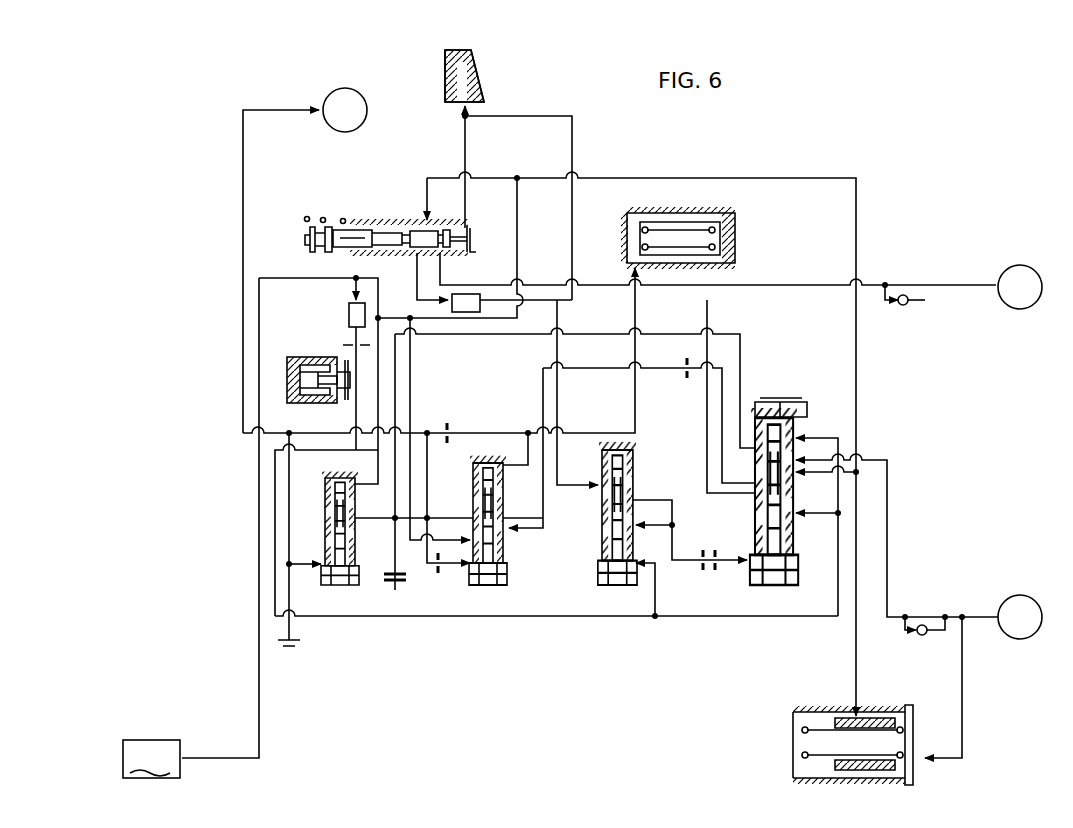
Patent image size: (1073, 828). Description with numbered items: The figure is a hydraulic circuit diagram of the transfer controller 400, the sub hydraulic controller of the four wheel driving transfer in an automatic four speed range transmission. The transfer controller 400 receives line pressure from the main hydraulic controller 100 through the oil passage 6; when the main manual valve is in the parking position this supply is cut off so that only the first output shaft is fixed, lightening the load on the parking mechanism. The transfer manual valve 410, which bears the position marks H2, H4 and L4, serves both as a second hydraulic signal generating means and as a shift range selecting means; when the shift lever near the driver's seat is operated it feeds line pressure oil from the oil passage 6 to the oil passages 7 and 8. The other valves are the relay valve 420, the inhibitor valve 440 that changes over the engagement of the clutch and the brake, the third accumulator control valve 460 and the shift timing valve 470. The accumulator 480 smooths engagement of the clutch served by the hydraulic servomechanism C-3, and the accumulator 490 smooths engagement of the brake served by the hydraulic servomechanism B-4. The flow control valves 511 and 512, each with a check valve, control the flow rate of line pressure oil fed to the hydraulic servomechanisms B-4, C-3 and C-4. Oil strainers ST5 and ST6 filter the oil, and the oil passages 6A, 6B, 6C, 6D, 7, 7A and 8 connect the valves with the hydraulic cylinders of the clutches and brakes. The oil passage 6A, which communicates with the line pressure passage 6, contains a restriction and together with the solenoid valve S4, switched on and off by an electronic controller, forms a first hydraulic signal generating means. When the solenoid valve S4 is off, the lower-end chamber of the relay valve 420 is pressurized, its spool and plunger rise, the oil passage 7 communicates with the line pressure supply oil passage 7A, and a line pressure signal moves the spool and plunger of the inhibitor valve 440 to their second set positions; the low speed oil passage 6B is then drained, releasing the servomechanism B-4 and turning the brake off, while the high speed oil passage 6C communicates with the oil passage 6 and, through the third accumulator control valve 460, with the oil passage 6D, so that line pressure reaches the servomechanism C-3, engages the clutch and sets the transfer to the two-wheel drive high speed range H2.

The transfer controller 400 is at (870, 219).
The transfer manual valve 410 is at (413, 215).
The relay valve 420 is at (603, 590).
The inhibitor valve 440 is at (742, 590).
The third accumulator control valve 460 is at (474, 593).
The shift timing valve 470 is at (364, 590).
The accumulator 480 is at (698, 208).
The accumulator 490 is at (788, 753).
The flow control valve 511 is at (923, 623).
The flow control valve 512 is at (904, 307).
The main hydraulic controller 100 is at (151, 759).
The line pressure oil passage 6 is at (517, 176).
The oil passage 6A is at (637, 616).
The low speed oil passage 6B is at (887, 513).
The high speed oil passage 6C is at (651, 368).
The oil passage 6D is at (243, 193).
The oil passage 7 is at (420, 284).
The line pressure supply oil passage 7A is at (676, 542).
The oil passage 8 is at (440, 266).
The oil strainer ST5 is at (349, 315).
The oil strainer ST6 is at (466, 312).
The solenoid valve S4 is at (320, 406).
The two-wheel drive high speed range H2 is at (306, 201).
The high fourth position H4 is at (323, 202).
The low fourth position L4 is at (343, 205).
The hydraulic servomechanism C-3 is at (345, 110).
The hydraulic servomechanism C-4 is at (1020, 287).
The hydraulic servomechanism B-4 is at (1020, 617).